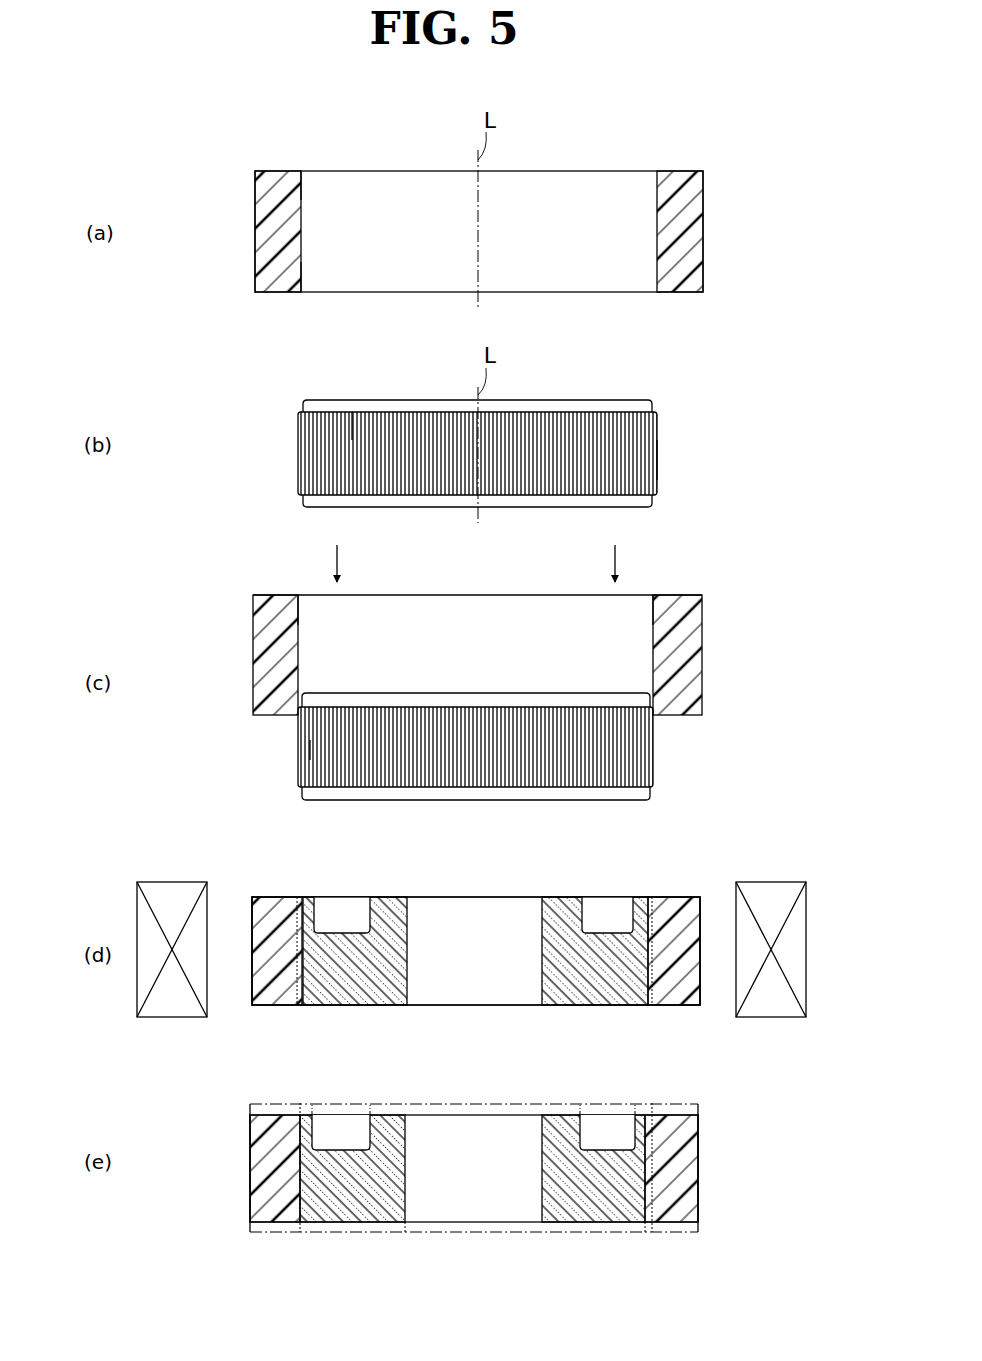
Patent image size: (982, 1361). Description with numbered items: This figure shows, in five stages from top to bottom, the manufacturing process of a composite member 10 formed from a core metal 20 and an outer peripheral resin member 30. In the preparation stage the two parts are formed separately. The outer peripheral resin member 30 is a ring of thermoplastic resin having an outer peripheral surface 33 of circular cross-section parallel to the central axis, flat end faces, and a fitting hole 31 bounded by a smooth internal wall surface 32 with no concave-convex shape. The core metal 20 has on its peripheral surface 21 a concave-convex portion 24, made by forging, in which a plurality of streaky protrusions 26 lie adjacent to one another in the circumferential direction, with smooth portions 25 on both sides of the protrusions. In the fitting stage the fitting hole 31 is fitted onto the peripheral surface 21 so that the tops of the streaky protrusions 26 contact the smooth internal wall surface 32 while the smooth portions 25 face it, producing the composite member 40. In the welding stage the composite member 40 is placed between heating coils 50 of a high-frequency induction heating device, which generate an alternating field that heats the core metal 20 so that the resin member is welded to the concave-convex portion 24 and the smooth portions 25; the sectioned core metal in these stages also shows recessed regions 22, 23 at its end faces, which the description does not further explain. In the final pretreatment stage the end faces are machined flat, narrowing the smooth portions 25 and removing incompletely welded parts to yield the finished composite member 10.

The composite member 10 is at (431, 1112).
The core metal 20 is at (566, 399).
The peripheral surface 21 is at (659, 445).
The first recess 22 is at (408, 924).
The second recess 23 is at (631, 918).
The concave-convex portion 24 is at (659, 475).
The smooth portions 25 is at (655, 405).
The streaky protrusions 26 is at (353, 435).
The outer peripheral resin member 30 is at (589, 171).
The fitting hole 31 is at (301, 185).
The smooth internal wall surface 32 is at (301, 275).
The outer peripheral surface 33 is at (705, 233).
The composite member 40 is at (266, 891).
The heating coil 50 is at (172, 882).